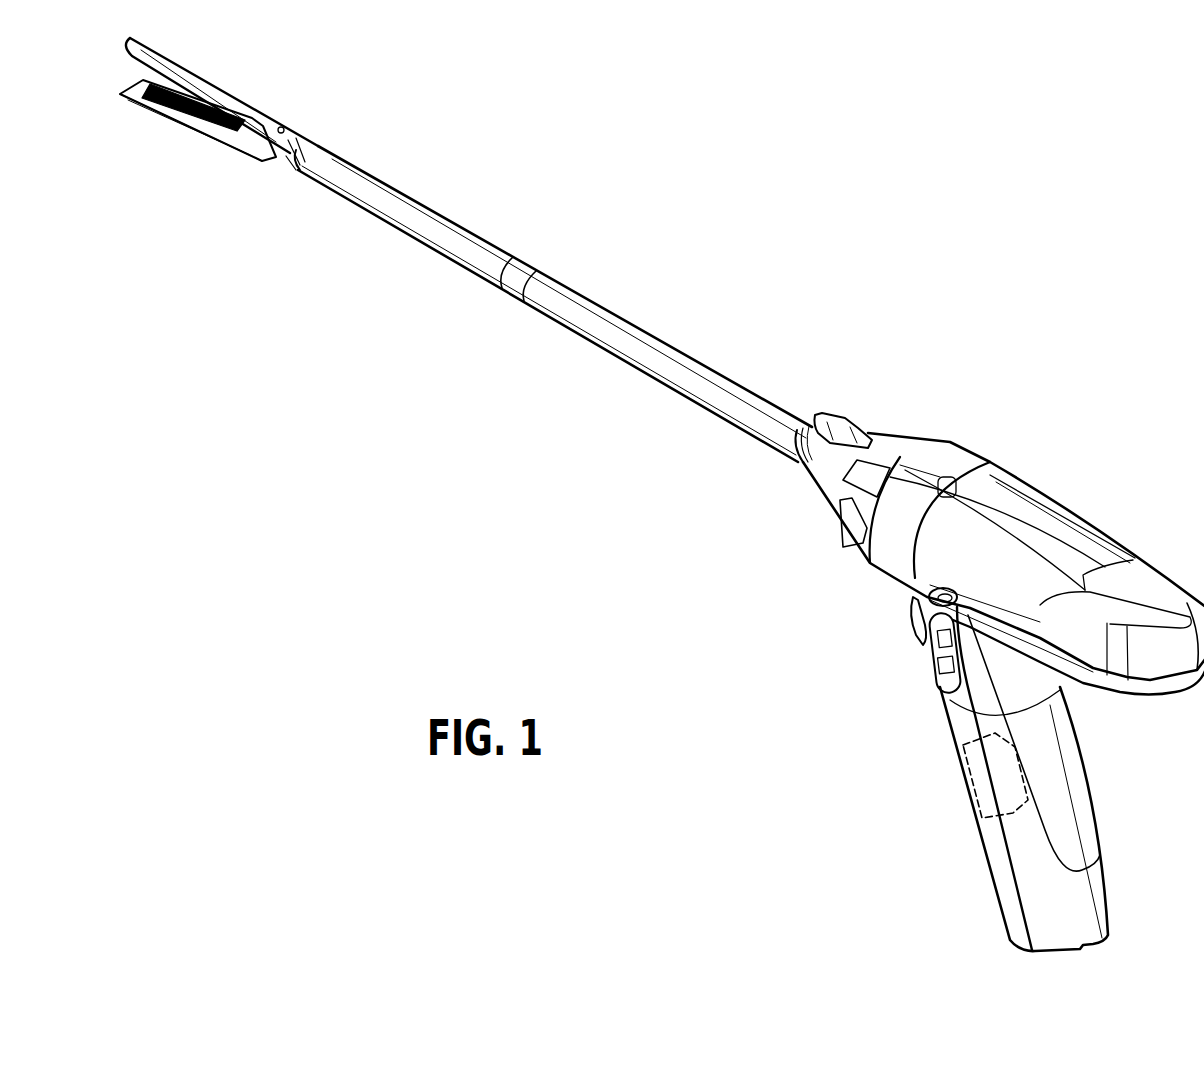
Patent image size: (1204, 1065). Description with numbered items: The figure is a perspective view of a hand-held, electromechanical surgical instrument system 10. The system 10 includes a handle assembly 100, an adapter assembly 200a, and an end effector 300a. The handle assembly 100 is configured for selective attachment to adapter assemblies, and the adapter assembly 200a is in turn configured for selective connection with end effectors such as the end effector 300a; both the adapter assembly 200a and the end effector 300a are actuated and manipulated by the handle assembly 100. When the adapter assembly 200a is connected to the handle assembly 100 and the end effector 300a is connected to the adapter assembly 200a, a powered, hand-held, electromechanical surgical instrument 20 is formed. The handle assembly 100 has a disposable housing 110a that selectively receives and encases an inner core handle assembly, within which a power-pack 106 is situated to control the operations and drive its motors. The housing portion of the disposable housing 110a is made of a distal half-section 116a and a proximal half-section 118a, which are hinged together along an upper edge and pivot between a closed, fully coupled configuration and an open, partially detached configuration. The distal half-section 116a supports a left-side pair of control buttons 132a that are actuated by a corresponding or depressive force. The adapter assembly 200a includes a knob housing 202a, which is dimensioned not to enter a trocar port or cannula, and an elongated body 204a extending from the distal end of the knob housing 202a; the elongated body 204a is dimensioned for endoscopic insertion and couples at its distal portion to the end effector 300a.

The electromechanical surgical instrument system 10 is at (905, 208).
The powered, hand-held, electromechanical surgical instrument 20 is at (855, 388).
The handle assembly 100 is at (1028, 468).
The power-pack 106 is at (968, 795).
The disposable housing 110a is at (1096, 523).
The distal half-section 116a is at (991, 884).
The proximal half-section 118a is at (1107, 904).
The left-side pair of control buttons 132a is at (923, 650).
The adapter assembly 200a is at (719, 362).
The knob housing 202a is at (900, 443).
The elongated body 204a is at (594, 291).
The end effector 300a is at (284, 105).